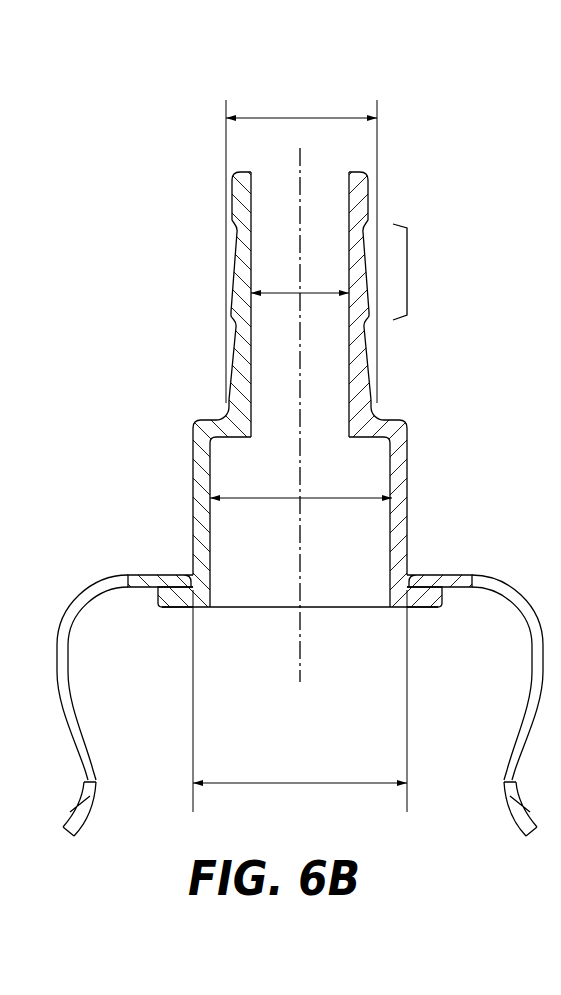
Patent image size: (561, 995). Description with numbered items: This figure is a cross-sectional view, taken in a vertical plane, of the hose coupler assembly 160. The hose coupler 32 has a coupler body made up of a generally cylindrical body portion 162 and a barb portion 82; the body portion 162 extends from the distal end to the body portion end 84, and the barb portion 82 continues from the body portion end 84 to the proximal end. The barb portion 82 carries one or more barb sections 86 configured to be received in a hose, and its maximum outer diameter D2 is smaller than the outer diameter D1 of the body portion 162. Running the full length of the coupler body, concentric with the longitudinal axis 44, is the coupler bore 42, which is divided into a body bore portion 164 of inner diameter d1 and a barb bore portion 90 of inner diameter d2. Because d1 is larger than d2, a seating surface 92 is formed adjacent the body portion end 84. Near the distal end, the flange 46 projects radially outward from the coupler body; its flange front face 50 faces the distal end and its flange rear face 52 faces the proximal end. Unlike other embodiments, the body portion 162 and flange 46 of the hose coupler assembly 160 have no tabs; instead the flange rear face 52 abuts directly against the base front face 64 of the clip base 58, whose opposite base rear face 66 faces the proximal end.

The hose coupler assembly 160 is at (460, 218).
The coupler bore 42 is at (333, 170).
The longitudinal axis 44 is at (303, 160).
The barb bore portion 90 is at (331, 213).
The barb portion 82 is at (232, 293).
The barb sections 86 is at (407, 292).
The hose coupler 32 is at (383, 340).
The body portion end 84 is at (415, 416).
The body portion 162 is at (397, 468).
The seating surface 92 is at (242, 438).
The body bore portion 164 is at (360, 563).
The clip base 58 is at (153, 580).
The base rear face 66 is at (438, 576).
The flange 46 is at (176, 600).
The flange front face 50 is at (433, 608).
The flange rear face 52 is at (424, 607).
The base front face 64 is at (462, 589).